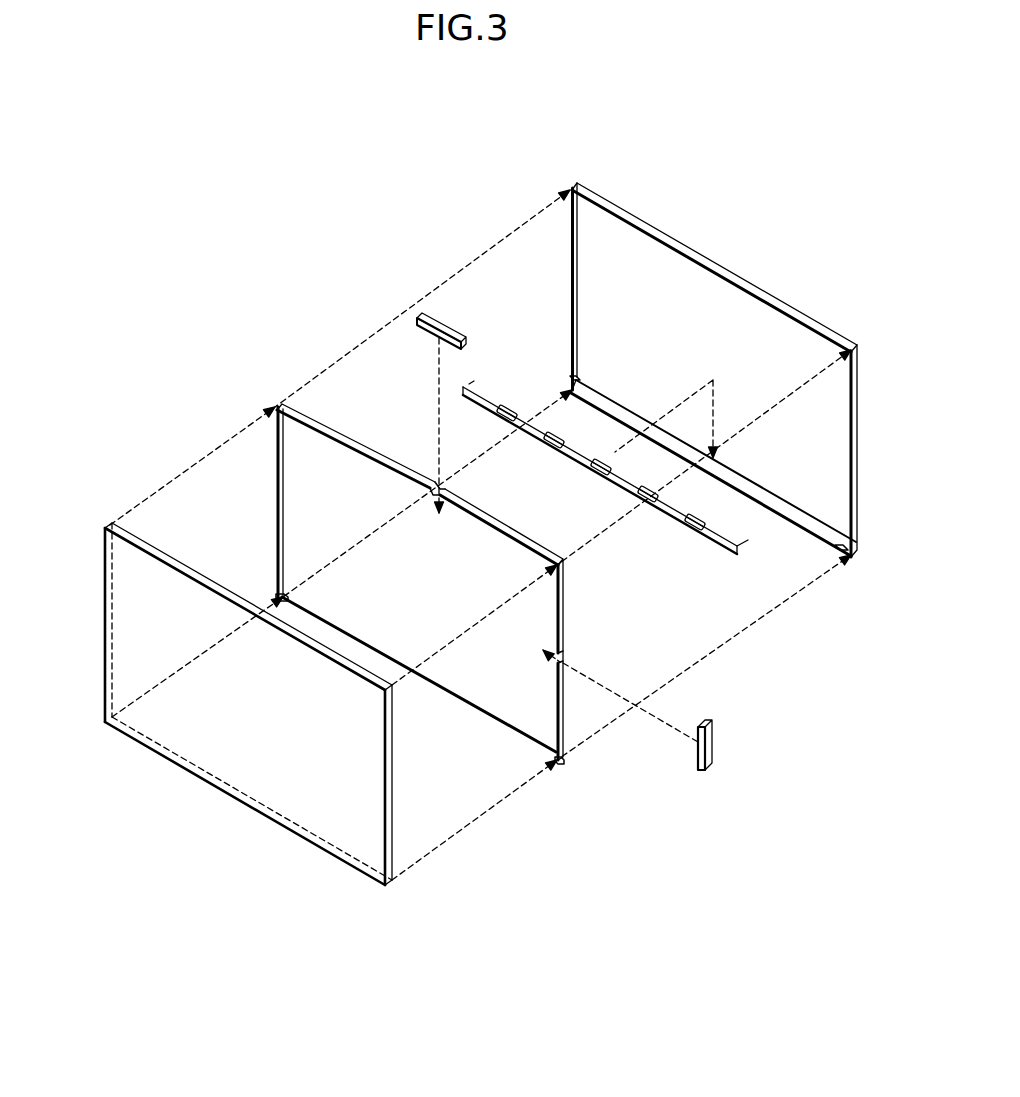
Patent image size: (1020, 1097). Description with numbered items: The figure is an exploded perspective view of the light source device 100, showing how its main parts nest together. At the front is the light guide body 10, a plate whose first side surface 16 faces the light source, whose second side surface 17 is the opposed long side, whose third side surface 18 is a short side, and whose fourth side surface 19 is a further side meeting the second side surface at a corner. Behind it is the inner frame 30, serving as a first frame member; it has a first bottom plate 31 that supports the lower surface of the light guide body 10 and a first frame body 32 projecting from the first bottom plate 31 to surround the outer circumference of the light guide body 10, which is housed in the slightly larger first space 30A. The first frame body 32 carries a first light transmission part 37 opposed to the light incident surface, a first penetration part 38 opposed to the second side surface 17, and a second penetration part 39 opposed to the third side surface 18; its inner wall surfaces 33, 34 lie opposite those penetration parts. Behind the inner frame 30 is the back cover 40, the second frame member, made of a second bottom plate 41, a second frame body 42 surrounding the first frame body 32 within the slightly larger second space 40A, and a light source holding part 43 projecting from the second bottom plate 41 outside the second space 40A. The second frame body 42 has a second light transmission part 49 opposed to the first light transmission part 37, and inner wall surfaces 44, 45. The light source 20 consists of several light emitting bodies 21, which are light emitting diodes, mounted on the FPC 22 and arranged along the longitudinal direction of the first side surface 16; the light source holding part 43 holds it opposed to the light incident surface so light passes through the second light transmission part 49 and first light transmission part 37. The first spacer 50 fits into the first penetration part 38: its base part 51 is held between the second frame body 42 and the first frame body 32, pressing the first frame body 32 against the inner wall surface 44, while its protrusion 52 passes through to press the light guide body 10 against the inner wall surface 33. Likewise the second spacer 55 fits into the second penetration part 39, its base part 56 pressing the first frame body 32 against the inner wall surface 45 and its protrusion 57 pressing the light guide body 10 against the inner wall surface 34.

The light source device 100 is at (736, 228).
The light guide body 10 is at (237, 782).
The first side surface 16 is at (278, 825).
The second side surface 17 is at (178, 570).
The third side surface 18 is at (392, 828).
The fourth side surface 19 is at (105, 668).
The light source 20 is at (728, 562).
The light emitting bodies 21 is at (498, 418).
The FPC 22 is at (726, 550).
The inner frame 30 is at (310, 334).
The first space 30A is at (440, 700).
The first bottom plate 31 is at (298, 440).
The first frame body 32 is at (272, 452).
The inner wall surface 33 is at (276, 595).
The inner wall surface 34 is at (277, 512).
The first light transmission part 37 is at (553, 763).
The first penetration part 38 is at (430, 485).
The second penetration part 39 is at (548, 668).
The back cover 40 is at (605, 113).
The second space 40A is at (778, 325).
The second bottom plate 41 is at (595, 225).
The second frame body 42 is at (567, 233).
The light source holding part 43 is at (810, 530).
The inner wall surface 44 is at (568, 378).
The inner wall surface 45 is at (570, 292).
The second light transmission part 49 is at (840, 550).
The first spacer 50 is at (460, 214).
The base part 51 is at (440, 318).
The protrusion 52 is at (425, 333).
The second spacer 55 is at (757, 840).
The base part 56 is at (712, 748).
The protrusion 57 is at (700, 748).